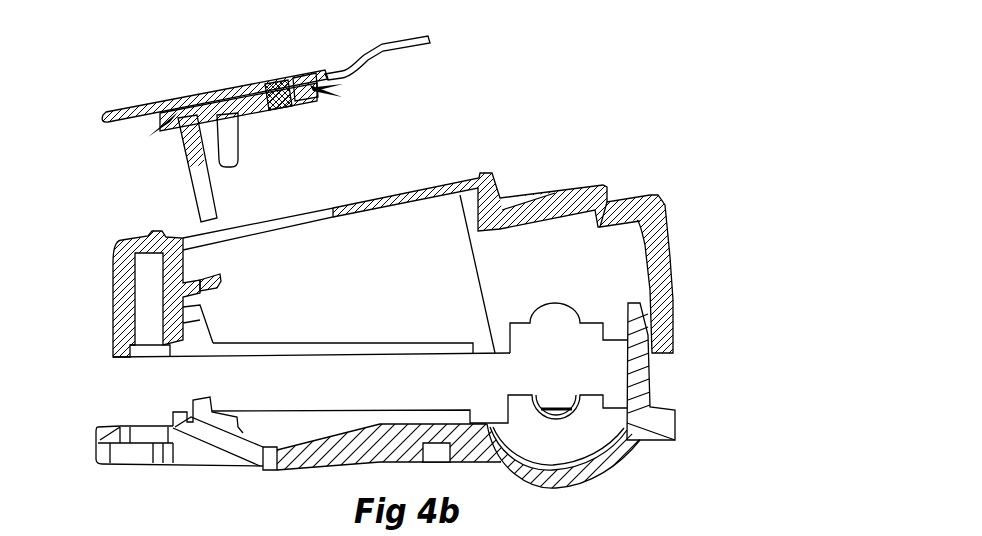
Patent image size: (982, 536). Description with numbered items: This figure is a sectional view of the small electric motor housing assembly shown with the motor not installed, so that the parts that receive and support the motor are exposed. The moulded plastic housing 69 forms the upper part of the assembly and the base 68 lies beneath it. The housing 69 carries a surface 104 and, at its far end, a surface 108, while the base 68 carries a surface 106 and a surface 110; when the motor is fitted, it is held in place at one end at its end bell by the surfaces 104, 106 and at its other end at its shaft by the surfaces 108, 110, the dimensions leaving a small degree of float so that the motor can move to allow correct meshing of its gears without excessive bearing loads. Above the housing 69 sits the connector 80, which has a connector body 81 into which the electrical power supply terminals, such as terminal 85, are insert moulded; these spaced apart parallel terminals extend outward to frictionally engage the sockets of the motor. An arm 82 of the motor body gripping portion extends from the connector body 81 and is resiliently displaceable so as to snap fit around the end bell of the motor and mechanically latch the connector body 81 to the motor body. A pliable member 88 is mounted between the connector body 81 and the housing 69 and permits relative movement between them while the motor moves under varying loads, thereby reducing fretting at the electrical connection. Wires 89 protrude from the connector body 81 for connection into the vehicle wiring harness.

The base 68 is at (97, 445).
The housing 69 is at (553, 190).
The connector 80 is at (163, 70).
The connector body 81 is at (118, 108).
The arm 82 is at (203, 202).
The electrical power supply terminal 85 is at (227, 157).
The pliable member 88 is at (347, 83).
The wires 89 is at (417, 46).
The surface 104 is at (218, 290).
The surface 106 is at (220, 410).
The surface 108 is at (643, 235).
The surface 110 is at (632, 303).